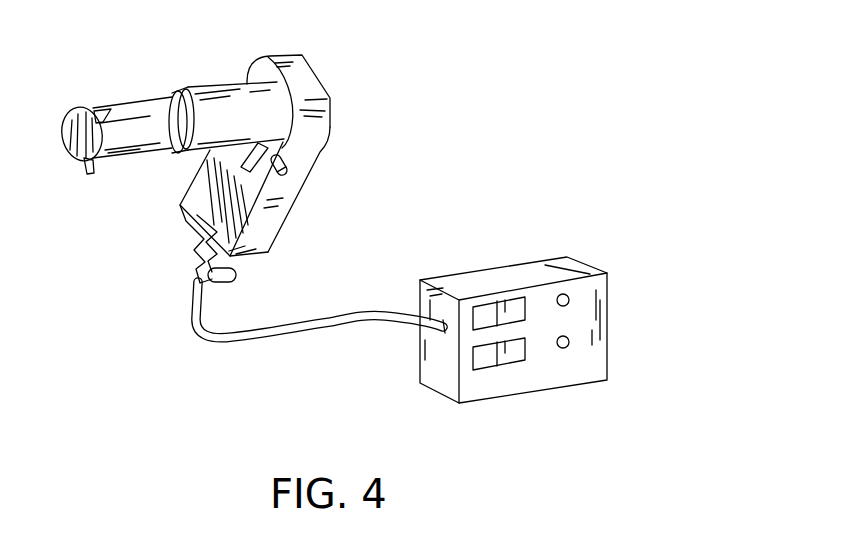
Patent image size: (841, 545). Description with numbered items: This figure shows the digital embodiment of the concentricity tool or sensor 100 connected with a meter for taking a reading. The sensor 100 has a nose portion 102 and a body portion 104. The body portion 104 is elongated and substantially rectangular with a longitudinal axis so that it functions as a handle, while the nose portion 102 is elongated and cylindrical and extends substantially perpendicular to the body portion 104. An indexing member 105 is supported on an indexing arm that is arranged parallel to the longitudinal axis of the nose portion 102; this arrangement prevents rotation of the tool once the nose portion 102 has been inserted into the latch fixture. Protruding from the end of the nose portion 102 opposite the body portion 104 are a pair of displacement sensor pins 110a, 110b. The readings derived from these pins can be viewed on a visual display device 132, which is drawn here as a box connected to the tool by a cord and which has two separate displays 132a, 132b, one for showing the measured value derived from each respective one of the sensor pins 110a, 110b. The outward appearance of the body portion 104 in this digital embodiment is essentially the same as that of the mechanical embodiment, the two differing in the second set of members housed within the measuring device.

The concentricity tool or sensor 100 is at (308, 191).
The nose portion 102 is at (148, 110).
The body portion 104 is at (308, 85).
The indexing member 105 is at (318, 148).
The displacement sensor pin 110a is at (97, 107).
The displacement sensor pin 110b is at (92, 176).
The display device 132 is at (594, 361).
The display 132a is at (516, 302).
The display 132b is at (517, 355).